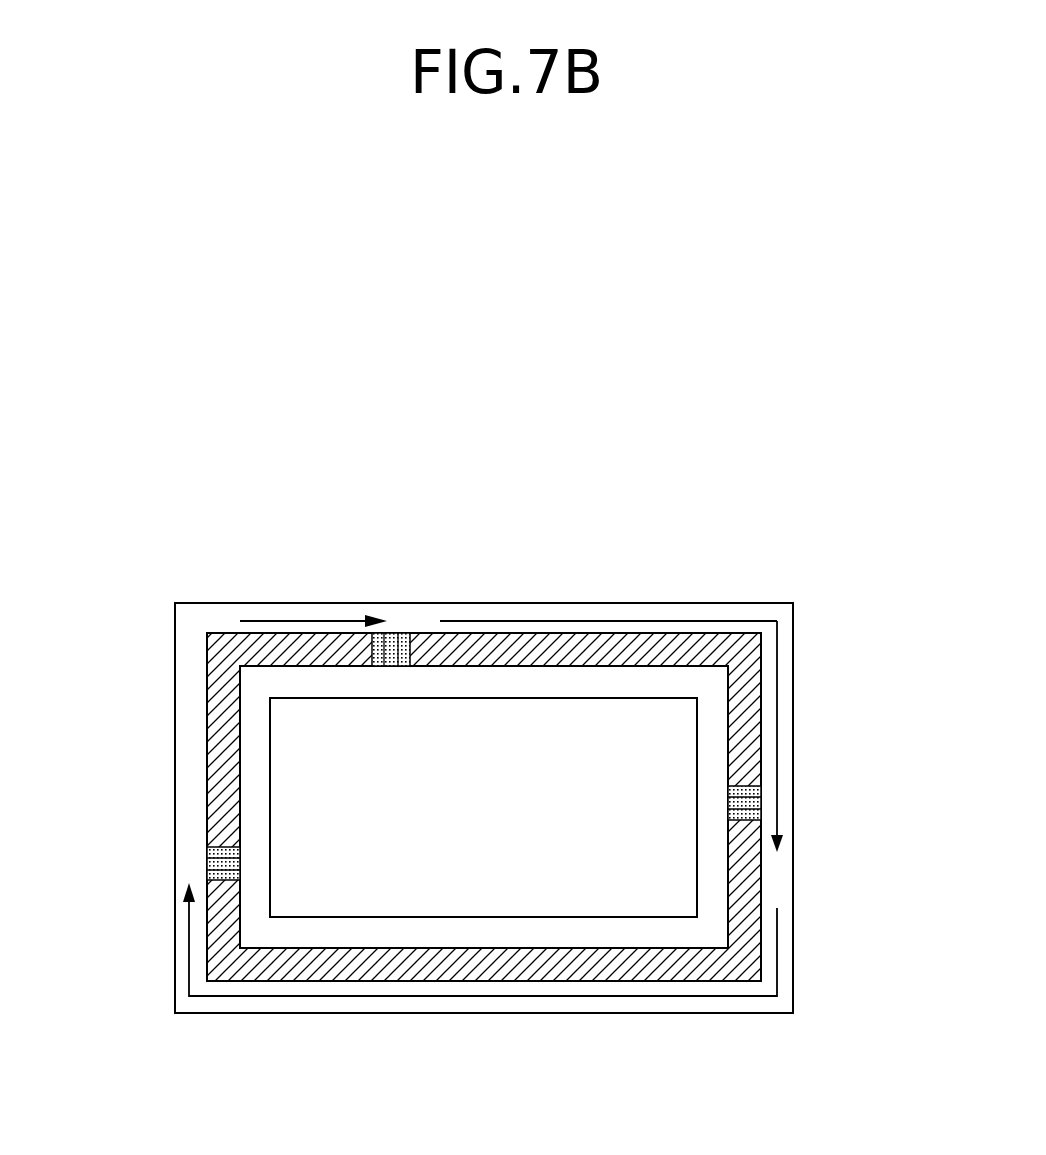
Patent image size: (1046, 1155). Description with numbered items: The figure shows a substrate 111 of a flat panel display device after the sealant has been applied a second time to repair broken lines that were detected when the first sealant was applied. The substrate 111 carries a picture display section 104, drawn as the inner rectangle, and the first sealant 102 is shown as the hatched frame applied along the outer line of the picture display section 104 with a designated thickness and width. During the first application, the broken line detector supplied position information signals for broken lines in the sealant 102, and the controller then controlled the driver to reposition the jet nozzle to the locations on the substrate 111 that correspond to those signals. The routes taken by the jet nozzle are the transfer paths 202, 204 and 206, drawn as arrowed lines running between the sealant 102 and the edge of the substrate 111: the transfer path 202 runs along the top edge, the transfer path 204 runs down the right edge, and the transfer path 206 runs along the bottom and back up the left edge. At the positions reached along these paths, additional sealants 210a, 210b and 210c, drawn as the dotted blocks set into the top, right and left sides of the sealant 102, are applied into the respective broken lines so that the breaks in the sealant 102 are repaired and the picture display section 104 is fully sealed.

The substrate 111 is at (793, 617).
The sealant 102 is at (633, 640).
The picture display section 104 is at (515, 808).
The transfer path 202 is at (286, 603).
The transfer path 204 is at (778, 721).
The transfer path 206 is at (777, 967).
The sealant 210a is at (398, 638).
The sealant 210b is at (760, 802).
The sealant 210c is at (213, 863).